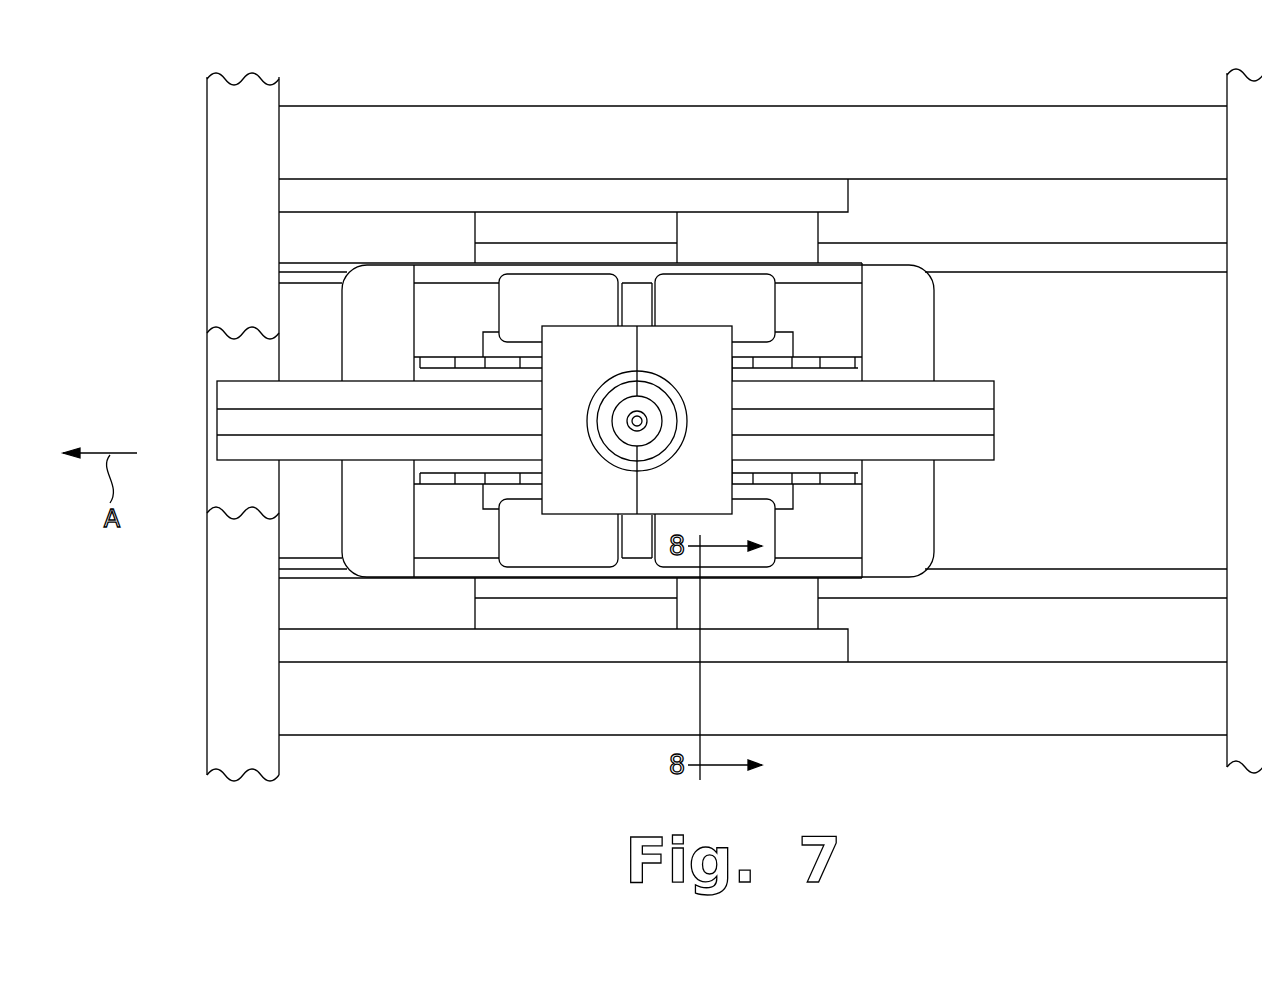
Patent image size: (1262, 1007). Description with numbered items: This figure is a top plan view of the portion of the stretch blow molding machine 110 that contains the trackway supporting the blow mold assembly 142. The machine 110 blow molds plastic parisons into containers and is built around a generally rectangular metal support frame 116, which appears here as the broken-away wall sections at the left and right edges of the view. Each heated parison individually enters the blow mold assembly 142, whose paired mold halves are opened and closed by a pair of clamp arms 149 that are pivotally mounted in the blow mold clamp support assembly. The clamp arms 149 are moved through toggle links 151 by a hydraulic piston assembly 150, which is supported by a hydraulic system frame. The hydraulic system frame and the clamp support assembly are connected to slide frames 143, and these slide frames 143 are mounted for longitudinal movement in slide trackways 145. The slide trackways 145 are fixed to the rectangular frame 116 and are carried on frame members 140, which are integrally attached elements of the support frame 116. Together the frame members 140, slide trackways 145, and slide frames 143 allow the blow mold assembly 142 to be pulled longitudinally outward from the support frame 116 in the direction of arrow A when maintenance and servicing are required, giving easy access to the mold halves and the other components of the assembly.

The stretch blow molding machine 110 is at (803, 73).
The support frame 116 is at (987, 703).
The frame members 140 is at (405, 235).
The blow mold assembly 142 is at (966, 352).
The slide frames 143 is at (843, 273).
The slide trackways 145 is at (1107, 257).
The clamp arms 149 is at (223, 393).
The hydraulic piston assembly 150 is at (637, 298).
The toggle links 151 is at (470, 372).